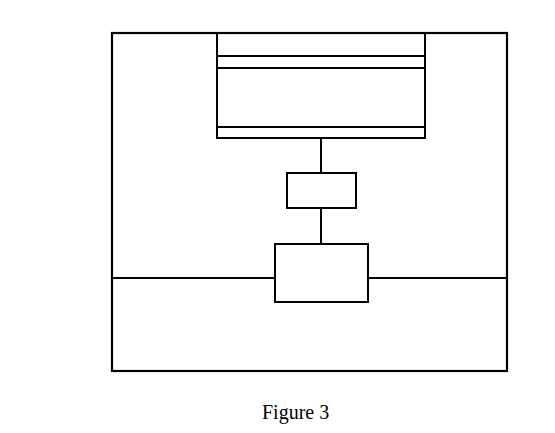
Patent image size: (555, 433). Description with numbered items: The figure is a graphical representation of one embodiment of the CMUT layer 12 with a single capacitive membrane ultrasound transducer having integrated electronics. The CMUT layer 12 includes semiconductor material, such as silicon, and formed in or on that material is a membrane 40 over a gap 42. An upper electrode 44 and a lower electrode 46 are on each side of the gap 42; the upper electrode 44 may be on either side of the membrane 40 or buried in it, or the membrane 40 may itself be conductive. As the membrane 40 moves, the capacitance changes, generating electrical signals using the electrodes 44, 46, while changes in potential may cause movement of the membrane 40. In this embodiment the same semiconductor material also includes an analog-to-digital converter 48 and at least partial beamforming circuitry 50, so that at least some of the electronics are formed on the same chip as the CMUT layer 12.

The CMUT layer 12 is at (112, 203).
The membrane 40 is at (217, 45).
The gap 42 is at (217, 90).
The upper electrode 44 is at (425, 63).
The electrode 46 is at (425, 133).
The analog-to-digital converter 48 is at (356, 190).
The beamforming circuitry 50 is at (321, 302).